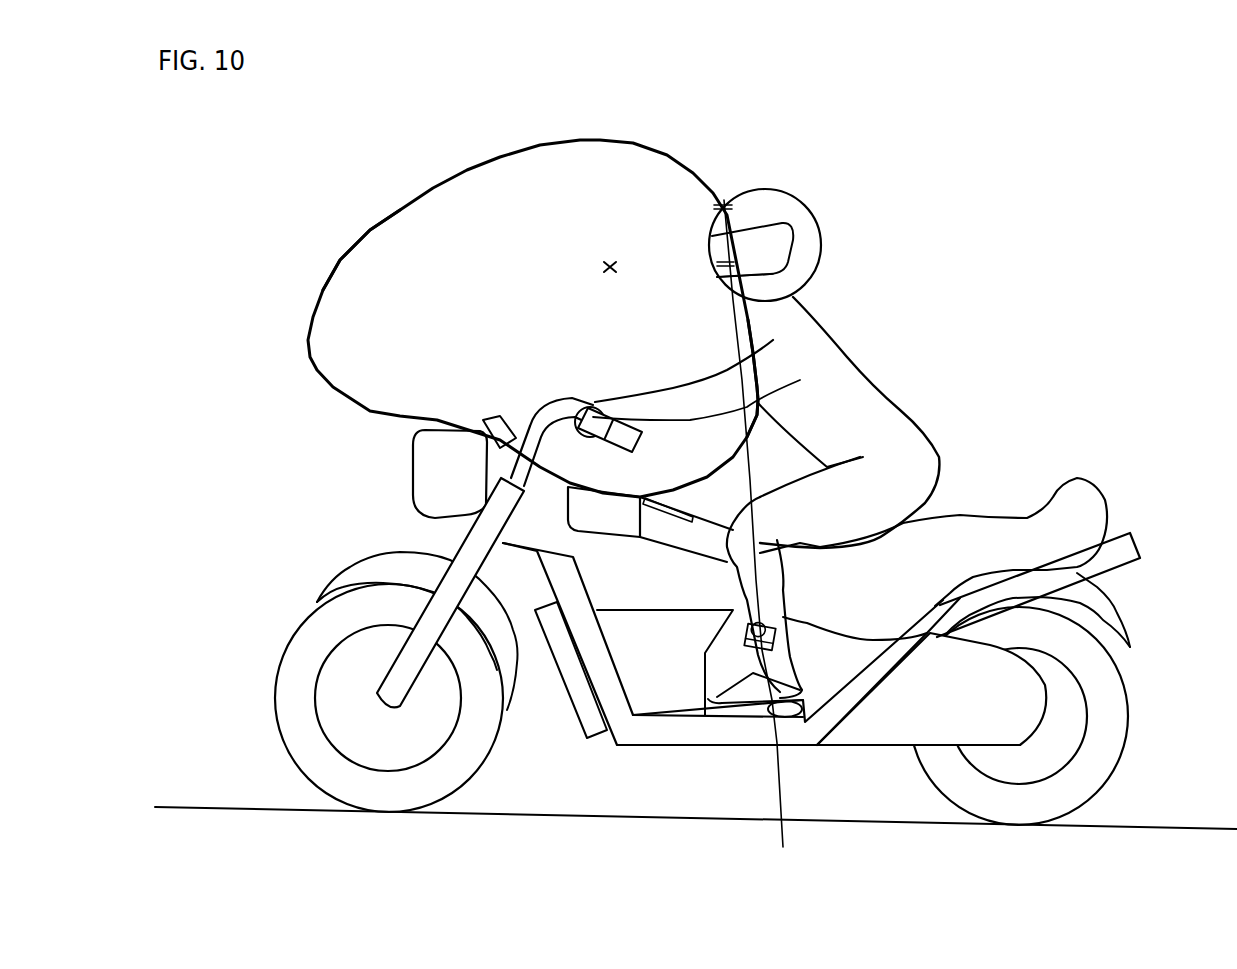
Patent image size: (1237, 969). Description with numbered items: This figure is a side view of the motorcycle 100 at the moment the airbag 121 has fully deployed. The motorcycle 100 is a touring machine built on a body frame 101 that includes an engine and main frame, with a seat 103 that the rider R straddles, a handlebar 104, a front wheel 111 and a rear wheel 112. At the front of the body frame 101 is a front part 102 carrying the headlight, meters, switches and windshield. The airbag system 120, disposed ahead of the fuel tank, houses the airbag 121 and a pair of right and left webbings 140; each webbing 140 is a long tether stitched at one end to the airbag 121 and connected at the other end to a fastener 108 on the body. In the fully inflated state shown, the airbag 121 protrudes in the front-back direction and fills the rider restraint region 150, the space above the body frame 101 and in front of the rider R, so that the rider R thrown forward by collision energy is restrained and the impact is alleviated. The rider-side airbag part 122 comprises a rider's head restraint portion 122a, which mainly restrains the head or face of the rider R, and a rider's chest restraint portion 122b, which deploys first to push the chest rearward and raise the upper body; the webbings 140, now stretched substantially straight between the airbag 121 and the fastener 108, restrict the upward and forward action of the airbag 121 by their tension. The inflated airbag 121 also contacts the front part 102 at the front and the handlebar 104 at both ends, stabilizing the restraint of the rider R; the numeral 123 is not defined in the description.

The motorcycle 100 is at (1049, 288).
The body frame 101 is at (637, 758).
The front part 102 is at (393, 452).
The seat 103 is at (997, 525).
The handlebar 104 is at (597, 396).
The fastener 108 is at (754, 539).
The front wheel 111 is at (385, 790).
The rear wheel 112 is at (1013, 803).
The airbag system 120 is at (615, 550).
The airbag 121 is at (410, 358).
The rider-side airbag part 122 is at (937, 186).
The rider's head restraint portion 122a is at (700, 255).
The rider's chest restraint portion 122b is at (713, 356).
The airbag front portion 123 is at (337, 251).
The webbing 140 is at (759, 464).
The rider restraint region 150 is at (608, 262).
The rider R is at (876, 372).